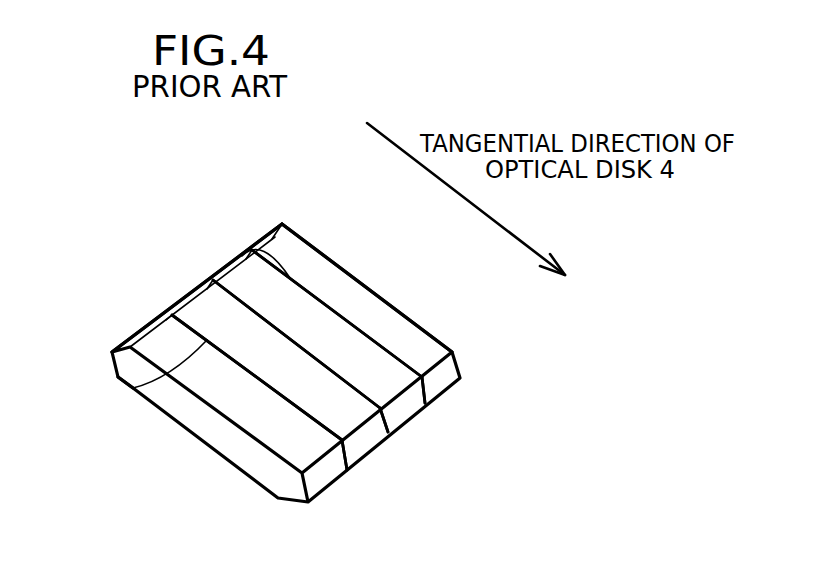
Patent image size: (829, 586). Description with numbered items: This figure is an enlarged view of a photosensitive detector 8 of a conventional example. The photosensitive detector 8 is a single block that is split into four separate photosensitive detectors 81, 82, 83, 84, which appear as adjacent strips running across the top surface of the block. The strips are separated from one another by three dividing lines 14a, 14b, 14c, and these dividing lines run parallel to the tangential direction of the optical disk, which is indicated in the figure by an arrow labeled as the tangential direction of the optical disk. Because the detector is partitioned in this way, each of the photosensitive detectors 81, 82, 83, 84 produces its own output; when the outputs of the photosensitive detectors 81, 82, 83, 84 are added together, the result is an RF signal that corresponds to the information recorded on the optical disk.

The photosensitive detector 8 is at (303, 230).
The dividing line 14a is at (279, 264).
The dividing line 14b is at (133, 388).
The dividing line 14c is at (197, 282).
The photosensitive detector 81 is at (277, 438).
The photosensitive detector 82 is at (342, 412).
The photosensitive detector 83 is at (385, 378).
The photosensitive detector 84 is at (427, 352).